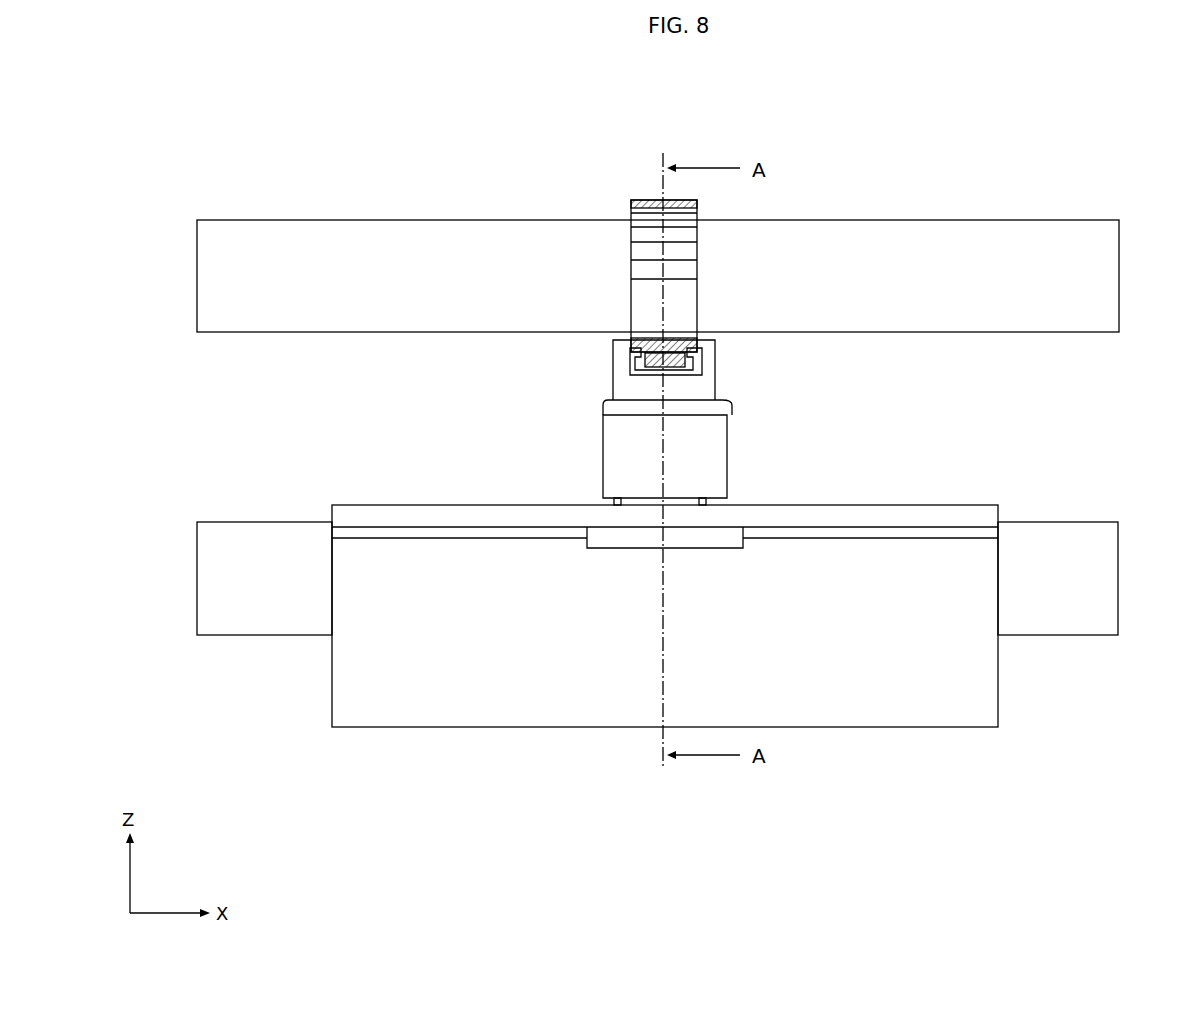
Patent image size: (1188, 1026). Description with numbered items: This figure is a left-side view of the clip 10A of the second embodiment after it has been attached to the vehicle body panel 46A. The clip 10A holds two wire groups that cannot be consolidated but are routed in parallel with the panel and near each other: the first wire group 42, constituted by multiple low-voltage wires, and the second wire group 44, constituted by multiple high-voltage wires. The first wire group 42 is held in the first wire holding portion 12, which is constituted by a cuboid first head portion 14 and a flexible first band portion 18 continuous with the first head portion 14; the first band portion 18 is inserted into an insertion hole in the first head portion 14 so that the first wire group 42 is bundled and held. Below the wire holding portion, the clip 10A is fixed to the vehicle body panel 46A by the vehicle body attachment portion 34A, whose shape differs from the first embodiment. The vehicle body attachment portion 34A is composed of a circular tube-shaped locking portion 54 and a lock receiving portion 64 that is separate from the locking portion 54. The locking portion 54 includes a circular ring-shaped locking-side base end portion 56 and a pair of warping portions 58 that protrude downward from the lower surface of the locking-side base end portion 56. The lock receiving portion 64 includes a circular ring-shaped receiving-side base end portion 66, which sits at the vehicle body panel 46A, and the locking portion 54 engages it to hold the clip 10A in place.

The clip 10A is at (636, 184).
The first wire holding portion 12 is at (740, 242).
The first band portion 18 is at (697, 208).
The first head portion 14 is at (715, 352).
The first wire group 42 is at (1100, 280).
The second wire group 44 is at (1100, 570).
The vehicle body panel 46A is at (688, 616).
The vehicle body attachment portion 34A is at (540, 447).
The locking portion 54 is at (565, 426).
The locking-side base end portion 56 is at (598, 402).
The warping portions 58 is at (630, 447).
The receiving-side base end portion 66 is at (570, 497).
The lock receiving portion 64 is at (598, 537).